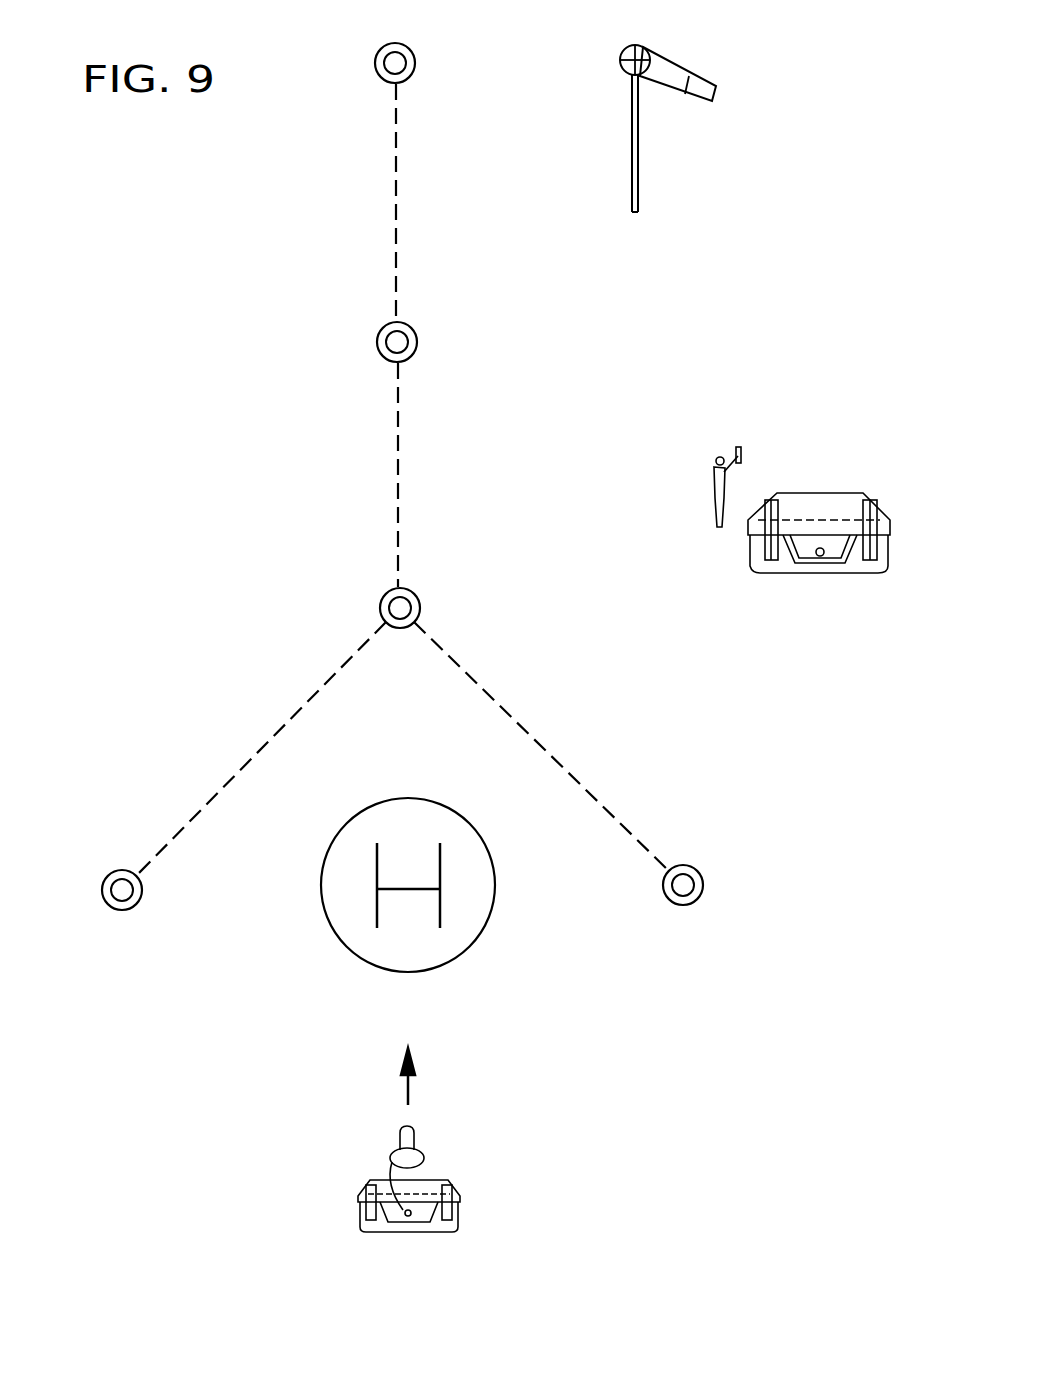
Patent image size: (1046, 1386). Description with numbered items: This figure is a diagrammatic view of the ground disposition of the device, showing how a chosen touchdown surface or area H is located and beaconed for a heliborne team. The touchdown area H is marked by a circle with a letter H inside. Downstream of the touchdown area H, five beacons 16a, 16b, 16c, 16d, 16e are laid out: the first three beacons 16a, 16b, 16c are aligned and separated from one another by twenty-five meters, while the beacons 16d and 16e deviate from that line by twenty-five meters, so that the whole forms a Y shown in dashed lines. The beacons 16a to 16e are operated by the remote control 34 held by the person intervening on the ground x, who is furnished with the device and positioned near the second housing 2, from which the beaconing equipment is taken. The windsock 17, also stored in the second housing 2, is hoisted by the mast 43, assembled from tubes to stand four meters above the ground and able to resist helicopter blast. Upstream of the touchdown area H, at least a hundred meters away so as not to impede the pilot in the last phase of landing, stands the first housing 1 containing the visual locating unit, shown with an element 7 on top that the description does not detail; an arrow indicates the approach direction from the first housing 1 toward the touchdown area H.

The beacon 16a is at (375, 63).
The beacon 16b is at (378, 337).
The beacon 16c is at (381, 604).
The beacon 16d is at (103, 882).
The beacon 16e is at (697, 867).
The windsock 17 is at (675, 66).
The mast 43 is at (640, 156).
The remote control 34 is at (738, 450).
The person intervening on the ground x is at (718, 481).
The second housing 2 is at (823, 488).
The first housing 1 is at (468, 1182).
The antenna 7 is at (428, 1136).
The chosen touchdown surface or area H is at (440, 948).